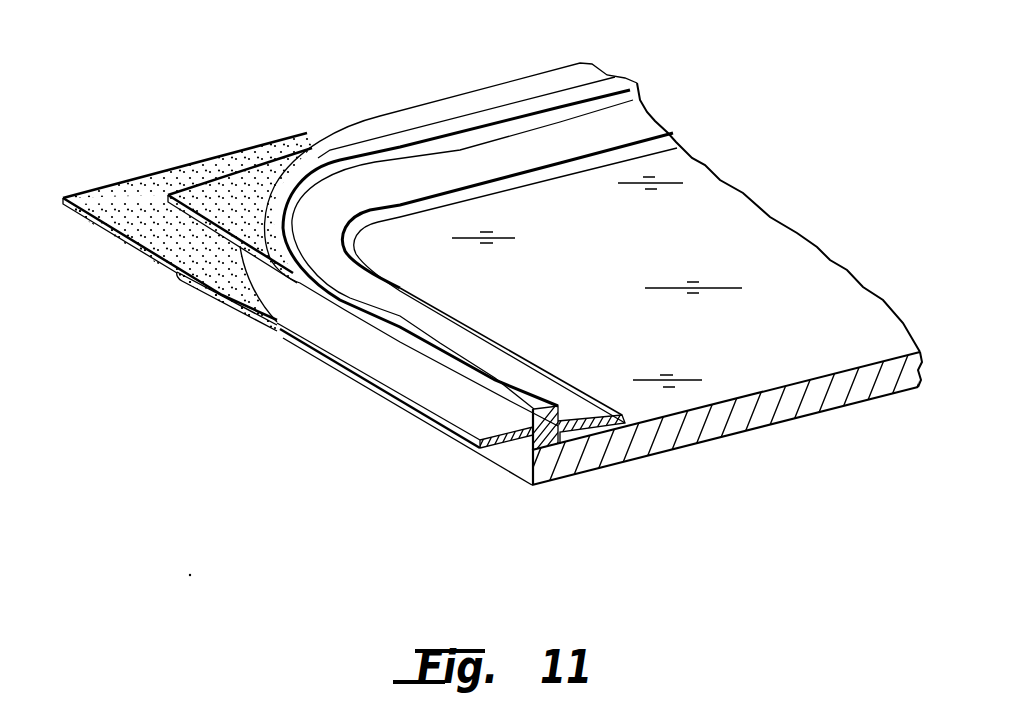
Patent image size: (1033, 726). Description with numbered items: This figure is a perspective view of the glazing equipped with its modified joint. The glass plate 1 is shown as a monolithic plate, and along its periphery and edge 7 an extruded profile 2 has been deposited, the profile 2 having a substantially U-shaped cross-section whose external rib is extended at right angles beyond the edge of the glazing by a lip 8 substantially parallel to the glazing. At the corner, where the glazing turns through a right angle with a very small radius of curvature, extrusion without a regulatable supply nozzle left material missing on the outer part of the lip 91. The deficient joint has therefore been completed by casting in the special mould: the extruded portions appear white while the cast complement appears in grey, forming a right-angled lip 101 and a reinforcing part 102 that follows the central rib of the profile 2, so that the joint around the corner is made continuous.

The glass plate 1 is at (762, 410).
The profile 2 is at (547, 102).
The edge 7 is at (512, 460).
The lip 8 is at (430, 400).
The lip 91 is at (220, 290).
The right-angled lip 101 is at (102, 200).
The reinforcing part 102 is at (213, 192).